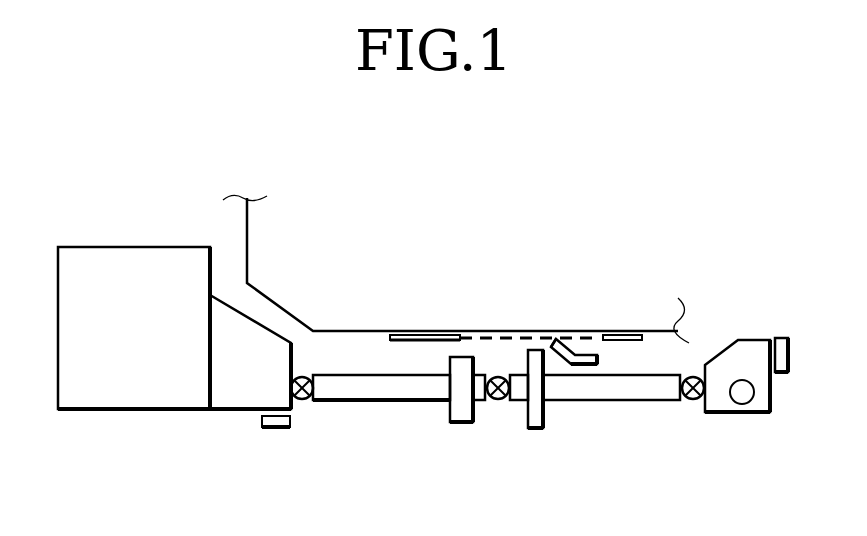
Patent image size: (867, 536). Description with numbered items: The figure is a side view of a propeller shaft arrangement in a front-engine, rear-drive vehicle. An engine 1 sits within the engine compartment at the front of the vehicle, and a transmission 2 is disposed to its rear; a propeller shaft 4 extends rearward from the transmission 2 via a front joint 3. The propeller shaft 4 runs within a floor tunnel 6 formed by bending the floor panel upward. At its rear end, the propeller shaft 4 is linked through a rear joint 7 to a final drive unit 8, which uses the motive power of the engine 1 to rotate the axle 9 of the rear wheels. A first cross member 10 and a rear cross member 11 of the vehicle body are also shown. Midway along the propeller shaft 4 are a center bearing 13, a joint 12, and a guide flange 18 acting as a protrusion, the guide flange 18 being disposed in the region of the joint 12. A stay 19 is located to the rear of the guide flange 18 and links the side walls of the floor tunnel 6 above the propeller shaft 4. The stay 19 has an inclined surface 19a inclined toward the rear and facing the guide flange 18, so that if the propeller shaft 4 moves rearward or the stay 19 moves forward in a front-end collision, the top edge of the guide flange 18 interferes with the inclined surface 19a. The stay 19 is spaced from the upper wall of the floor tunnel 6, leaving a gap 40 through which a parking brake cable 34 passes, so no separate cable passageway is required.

The engine 1 is at (110, 247).
The transmission 2 is at (227, 402).
The front joint 3 is at (303, 402).
The propeller shaft 4 is at (389, 404).
The floor tunnel 6 is at (368, 331).
The rear joint 7 is at (688, 402).
The final drive unit 8 is at (748, 338).
The axle 9 is at (740, 395).
The first cross member 10 is at (273, 430).
The rear cross member 11 is at (788, 348).
The joint 12 is at (493, 377).
The center bearing 13 is at (460, 422).
The guide flange 18 is at (533, 428).
The stay 19 is at (593, 340).
The inclined surface 19a is at (548, 355).
The parking brake cable 34 is at (435, 335).
The gap 40 is at (588, 352).